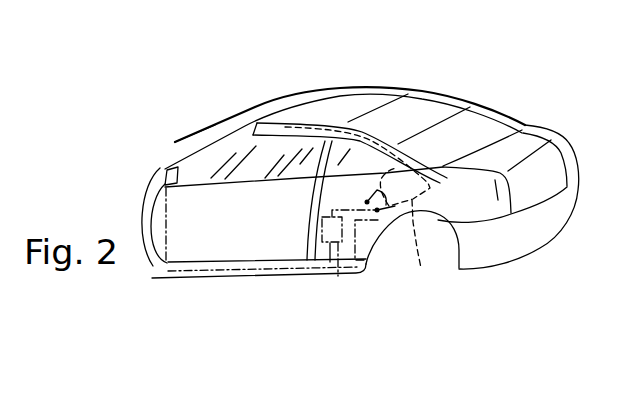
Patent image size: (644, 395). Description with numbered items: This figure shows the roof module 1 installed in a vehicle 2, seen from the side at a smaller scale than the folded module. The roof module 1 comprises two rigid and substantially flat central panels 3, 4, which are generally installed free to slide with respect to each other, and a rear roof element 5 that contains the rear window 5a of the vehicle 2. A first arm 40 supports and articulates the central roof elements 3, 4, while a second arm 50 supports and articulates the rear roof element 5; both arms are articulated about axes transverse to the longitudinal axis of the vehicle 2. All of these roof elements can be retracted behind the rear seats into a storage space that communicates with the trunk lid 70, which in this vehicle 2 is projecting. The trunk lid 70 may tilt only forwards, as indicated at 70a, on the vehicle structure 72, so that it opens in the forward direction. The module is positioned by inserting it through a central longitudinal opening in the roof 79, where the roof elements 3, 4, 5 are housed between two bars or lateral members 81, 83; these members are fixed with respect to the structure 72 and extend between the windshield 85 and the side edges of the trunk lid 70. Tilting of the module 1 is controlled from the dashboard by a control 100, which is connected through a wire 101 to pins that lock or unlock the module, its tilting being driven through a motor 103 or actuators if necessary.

The roof module 1 is at (423, 216).
The retractable roof 2 is at (317, 113).
The central roof element 3 is at (340, 113).
The central roof element 4 is at (406, 115).
The rear roof element 5 is at (471, 137).
The rear window 5a is at (500, 136).
The first arm 40 is at (389, 207).
The second arm 50 is at (427, 248).
The trunk lid 70 is at (538, 185).
The forward tilting of the trunk lid 70a is at (459, 182).
The vehicle structure 72 is at (207, 227).
The roof 79 is at (314, 82).
The lateral member 81 is at (287, 124).
The lateral member 83 is at (382, 89).
The windshield 85 is at (193, 138).
The control 100 is at (165, 179).
The wire 101 is at (257, 271).
The motor 103 is at (338, 276).